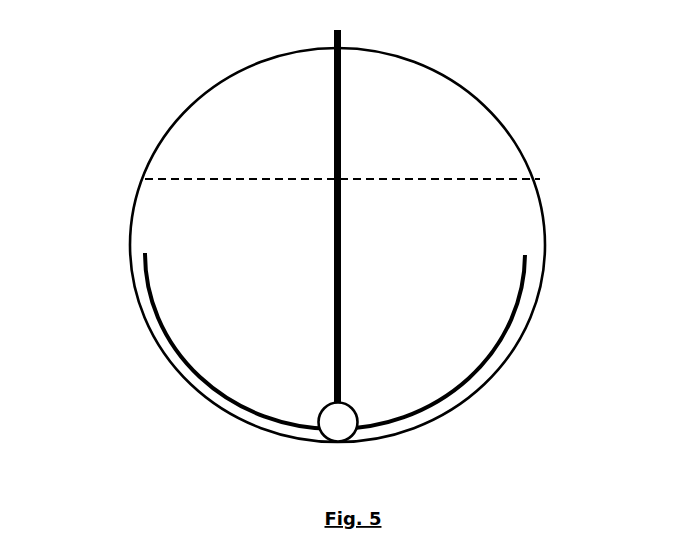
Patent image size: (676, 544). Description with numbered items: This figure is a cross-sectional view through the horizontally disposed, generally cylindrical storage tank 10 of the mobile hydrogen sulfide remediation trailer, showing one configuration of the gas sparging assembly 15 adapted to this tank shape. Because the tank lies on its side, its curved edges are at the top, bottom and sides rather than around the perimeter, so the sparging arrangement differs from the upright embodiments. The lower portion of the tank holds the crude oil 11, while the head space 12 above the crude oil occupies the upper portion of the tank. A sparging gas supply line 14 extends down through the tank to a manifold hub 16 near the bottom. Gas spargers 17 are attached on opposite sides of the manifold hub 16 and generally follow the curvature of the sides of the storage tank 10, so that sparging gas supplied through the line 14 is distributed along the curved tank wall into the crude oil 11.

The storage tank 10 is at (473, 90).
The crude oil 11 is at (409, 264).
The head space 12 is at (392, 94).
The sparging gas supply line 14 is at (334, 132).
The sparging assembly 15 is at (393, 222).
The manifold hub 16 is at (338, 422).
The gas spargers 17 is at (153, 313).